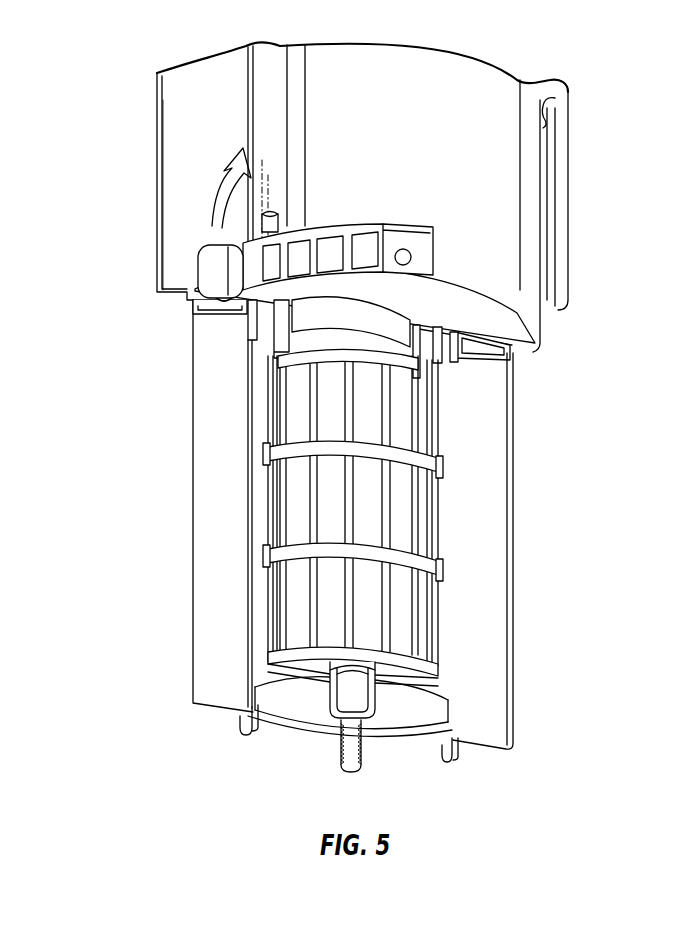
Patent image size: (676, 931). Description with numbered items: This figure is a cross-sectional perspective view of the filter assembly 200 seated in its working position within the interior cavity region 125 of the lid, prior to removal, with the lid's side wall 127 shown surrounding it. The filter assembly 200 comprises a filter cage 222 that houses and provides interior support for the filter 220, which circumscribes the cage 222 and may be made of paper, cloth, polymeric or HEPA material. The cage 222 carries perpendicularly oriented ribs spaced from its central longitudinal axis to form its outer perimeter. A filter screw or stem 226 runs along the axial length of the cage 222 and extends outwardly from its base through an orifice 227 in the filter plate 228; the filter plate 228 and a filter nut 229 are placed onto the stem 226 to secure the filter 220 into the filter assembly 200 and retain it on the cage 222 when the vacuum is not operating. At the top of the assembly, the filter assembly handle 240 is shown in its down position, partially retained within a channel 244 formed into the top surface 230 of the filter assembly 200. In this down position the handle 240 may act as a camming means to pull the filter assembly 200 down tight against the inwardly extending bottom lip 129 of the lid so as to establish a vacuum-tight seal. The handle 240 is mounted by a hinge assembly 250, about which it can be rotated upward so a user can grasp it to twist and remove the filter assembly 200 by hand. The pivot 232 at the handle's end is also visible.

The interior cavity region 125 is at (513, 67).
The cover side wall 127 is at (157, 143).
The inwardly extending bottom lip 129 is at (522, 348).
The filter assembly 200 is at (164, 400).
The filter 220 is at (212, 498).
The filter cage 222 is at (270, 608).
The filter stem 226 is at (345, 764).
The orifice 227 is at (368, 722).
The filter plate 228 is at (287, 718).
The filter nut 229 is at (462, 748).
The top surface 230 is at (498, 318).
The pivot ball 232 is at (190, 282).
The filter assembly handle 240 is at (301, 244).
The channel 244 is at (205, 300).
The hinge assembly 250 is at (435, 262).